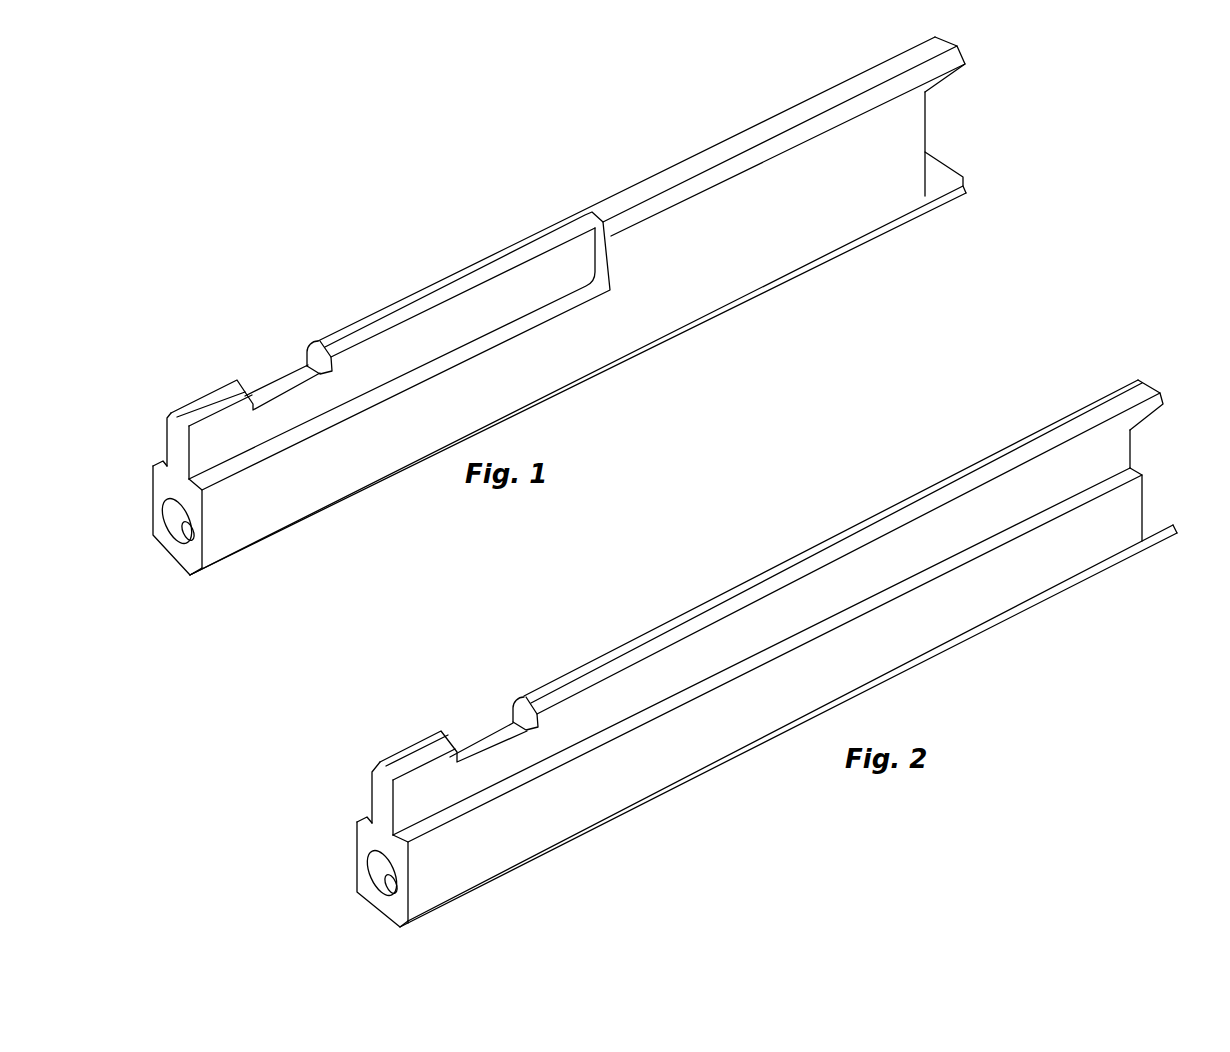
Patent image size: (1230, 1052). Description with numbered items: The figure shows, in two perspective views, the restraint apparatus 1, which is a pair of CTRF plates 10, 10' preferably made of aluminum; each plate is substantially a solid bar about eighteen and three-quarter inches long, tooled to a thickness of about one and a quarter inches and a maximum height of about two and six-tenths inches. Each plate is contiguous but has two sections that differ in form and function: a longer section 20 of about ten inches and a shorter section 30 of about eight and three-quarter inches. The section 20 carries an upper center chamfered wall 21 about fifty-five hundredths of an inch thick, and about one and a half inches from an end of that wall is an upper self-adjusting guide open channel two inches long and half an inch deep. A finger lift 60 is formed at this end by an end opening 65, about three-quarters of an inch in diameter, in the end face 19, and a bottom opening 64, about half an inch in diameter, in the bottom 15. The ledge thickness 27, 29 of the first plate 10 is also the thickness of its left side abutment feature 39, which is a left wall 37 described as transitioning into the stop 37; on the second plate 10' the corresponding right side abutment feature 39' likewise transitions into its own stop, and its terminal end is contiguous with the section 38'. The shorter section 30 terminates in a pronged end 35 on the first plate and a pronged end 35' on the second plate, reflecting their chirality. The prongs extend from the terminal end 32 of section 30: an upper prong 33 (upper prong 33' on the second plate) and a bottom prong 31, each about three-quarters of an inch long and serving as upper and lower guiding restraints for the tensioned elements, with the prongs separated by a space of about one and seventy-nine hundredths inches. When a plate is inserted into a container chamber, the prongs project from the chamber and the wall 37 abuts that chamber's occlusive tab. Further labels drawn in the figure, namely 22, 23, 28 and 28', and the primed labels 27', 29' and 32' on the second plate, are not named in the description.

In FIG. 1, the restraint apparatus 1 is at (1188, 153).
In FIG. 1, the CTRF plate 10 is at (583, 372).
In FIG. 2, the CTRF plate 10' is at (662, 609).
In FIG. 1, the bottom 15 is at (195, 574).
In FIG. 2, the bottom 15 is at (384, 921).
In FIG. 1, the end face 19 is at (181, 479).
In FIG. 2, the end face 19 is at (375, 829).
In FIG. 1, the longer section 20 is at (467, 398).
In FIG. 2, the longer section 20 is at (541, 819).
In FIG. 1, the upper center chamfered wall 21 is at (208, 392).
In FIG. 2, the upper center chamfered wall 21 is at (398, 751).
In FIG. 1, the notch 22 is at (270, 387).
In FIG. 2, the notch 22 is at (485, 735).
In FIG. 1, the block front face 23 is at (232, 427).
In FIG. 2, the block front face 23 is at (435, 777).
In FIG. 1, the ledge thickness 27 is at (131, 380).
In FIG. 2, the recess 27' is at (323, 761).
In FIG. 1, the lower face 28 is at (322, 540).
In FIG. 2, the lower face 28' is at (585, 875).
In FIG. 1, the ledge thickness 29 is at (375, 493).
In FIG. 2, the rotation direction 29' is at (659, 799).
In FIG. 1, the shorter section 30 is at (753, 233).
In FIG. 1, the bottom prong 31 is at (960, 186).
In FIG. 2, the bottom prong 31 is at (1165, 540).
In FIG. 1, the terminal end 32 is at (957, 144).
In FIG. 2, the end notch 32' is at (1166, 451).
In FIG. 1, the upper prong 33 is at (989, 67).
In FIG. 2, the upper prong 33' is at (1165, 376).
In FIG. 1, the pronged end 35 is at (1029, 155).
In FIG. 2, the pronged end 35' is at (1164, 341).
In FIG. 1, the left wall 37 is at (600, 252).
In FIG. 2, the section 38' is at (1106, 587).
In FIG. 1, the left side abutment feature 39 is at (696, 146).
In FIG. 2, the right side abutment feature 39' is at (881, 445).
In FIG. 1, the finger lift 60 is at (152, 601).
In FIG. 2, the finger lift 60 is at (259, 886).
In FIG. 1, the bottom opening 64 is at (190, 540).
In FIG. 2, the bottom opening 64 is at (360, 900).
In FIG. 1, the end opening 65 is at (163, 530).
In FIG. 2, the end opening 65 is at (372, 863).